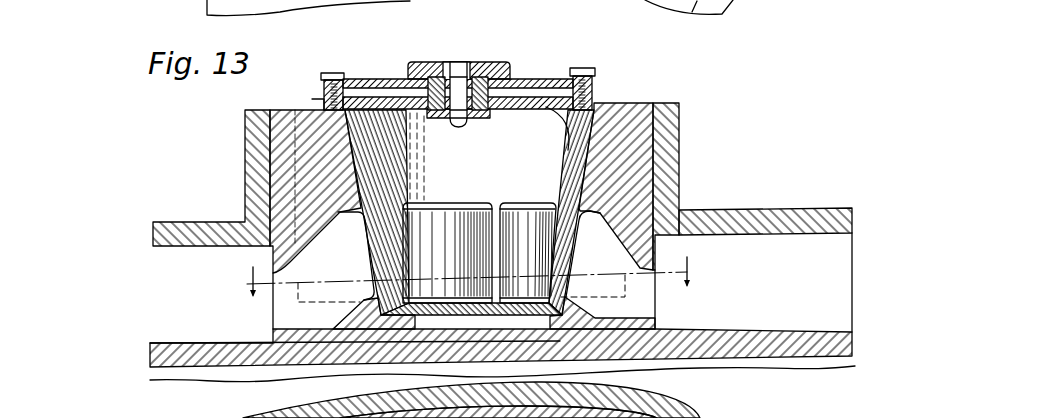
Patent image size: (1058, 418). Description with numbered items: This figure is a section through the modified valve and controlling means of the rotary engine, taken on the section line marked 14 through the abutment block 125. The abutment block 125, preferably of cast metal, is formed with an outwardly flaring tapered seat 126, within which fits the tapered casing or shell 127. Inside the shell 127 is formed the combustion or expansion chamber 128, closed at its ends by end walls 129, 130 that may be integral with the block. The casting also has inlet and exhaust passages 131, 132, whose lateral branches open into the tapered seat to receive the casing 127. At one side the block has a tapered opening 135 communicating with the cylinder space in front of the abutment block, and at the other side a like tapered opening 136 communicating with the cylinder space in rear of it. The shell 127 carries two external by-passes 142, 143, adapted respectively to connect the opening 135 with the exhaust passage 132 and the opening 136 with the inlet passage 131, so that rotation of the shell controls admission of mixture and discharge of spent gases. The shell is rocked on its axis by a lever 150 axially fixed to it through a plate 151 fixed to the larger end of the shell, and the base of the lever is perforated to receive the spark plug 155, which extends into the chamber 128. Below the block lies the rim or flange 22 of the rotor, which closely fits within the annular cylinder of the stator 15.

The section line 14-14 / inlet passage axis 14 is at (462, 277).
The stator 15 is at (700, 208).
The annular rim or flange 22 is at (778, 352).
The abutment block 125 is at (616, 105).
The tapered seat 126 is at (673, 104).
The tapered casing or shell 127 is at (549, 80).
The combustion or expansion chamber 128 is at (509, 117).
The end wall 129 is at (373, 110).
The end wall 130 is at (385, 340).
The inlet passage 131 is at (282, 416).
The exhaust passage 132 is at (650, 417).
The tapered opening 135 is at (656, 314).
The tapered opening 136 is at (272, 318).
The external by-pass 142 is at (527, 205).
The external by-pass 143 is at (453, 209).
The lever 150 is at (483, 63).
The plate 151 is at (368, 80).
The spark plug 155 is at (454, 62).